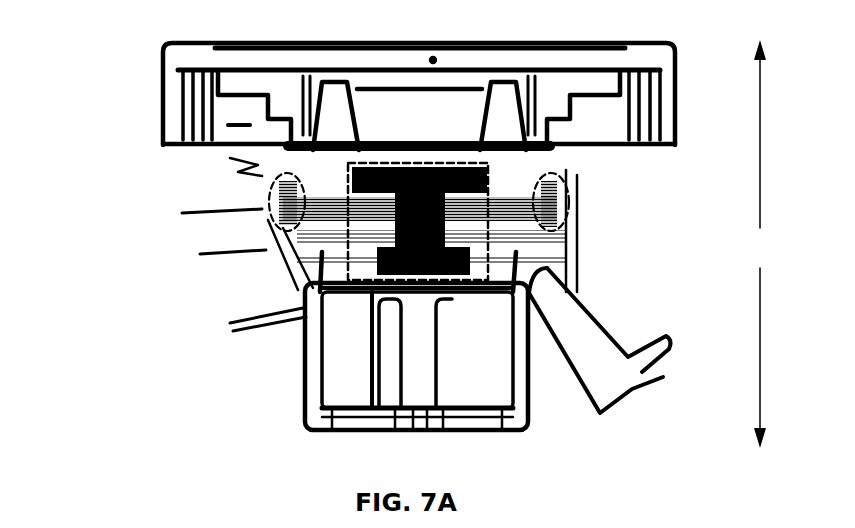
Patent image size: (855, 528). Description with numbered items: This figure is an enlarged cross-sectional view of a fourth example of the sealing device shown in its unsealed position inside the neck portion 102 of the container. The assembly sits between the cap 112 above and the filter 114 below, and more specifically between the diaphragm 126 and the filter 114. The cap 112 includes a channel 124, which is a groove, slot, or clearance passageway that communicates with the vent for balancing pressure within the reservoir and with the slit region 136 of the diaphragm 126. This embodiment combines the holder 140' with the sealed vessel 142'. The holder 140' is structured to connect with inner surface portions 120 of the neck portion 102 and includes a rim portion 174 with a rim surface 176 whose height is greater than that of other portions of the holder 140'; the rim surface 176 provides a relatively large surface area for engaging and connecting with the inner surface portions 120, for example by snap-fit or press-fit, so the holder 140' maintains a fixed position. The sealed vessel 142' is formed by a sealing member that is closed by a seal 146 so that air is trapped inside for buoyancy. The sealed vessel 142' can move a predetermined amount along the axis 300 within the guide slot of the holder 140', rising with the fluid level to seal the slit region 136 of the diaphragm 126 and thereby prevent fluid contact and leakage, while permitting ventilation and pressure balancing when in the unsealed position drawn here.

The neck portion 102 is at (130, 113).
The cap 112 is at (592, 58).
The filter 114 is at (471, 421).
The inner surface portions 120 is at (431, 220).
The channel 124 is at (433, 57).
The diaphragm 126 is at (292, 141).
The slit region 136 is at (540, 136).
The holder 140' is at (485, 313).
The sealed vessel 142' is at (346, 297).
The seal 146 is at (452, 272).
The rim portion 174 is at (268, 189).
The rim surface 176 is at (557, 210).
The axis 300 is at (758, 244).